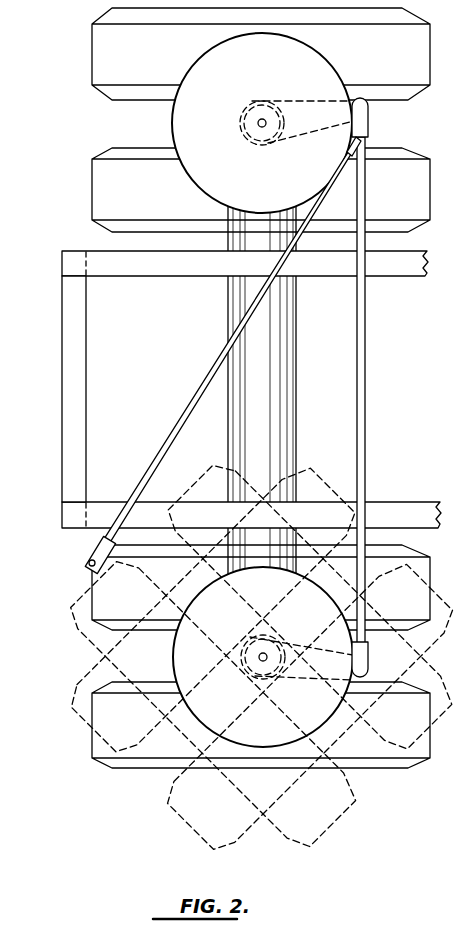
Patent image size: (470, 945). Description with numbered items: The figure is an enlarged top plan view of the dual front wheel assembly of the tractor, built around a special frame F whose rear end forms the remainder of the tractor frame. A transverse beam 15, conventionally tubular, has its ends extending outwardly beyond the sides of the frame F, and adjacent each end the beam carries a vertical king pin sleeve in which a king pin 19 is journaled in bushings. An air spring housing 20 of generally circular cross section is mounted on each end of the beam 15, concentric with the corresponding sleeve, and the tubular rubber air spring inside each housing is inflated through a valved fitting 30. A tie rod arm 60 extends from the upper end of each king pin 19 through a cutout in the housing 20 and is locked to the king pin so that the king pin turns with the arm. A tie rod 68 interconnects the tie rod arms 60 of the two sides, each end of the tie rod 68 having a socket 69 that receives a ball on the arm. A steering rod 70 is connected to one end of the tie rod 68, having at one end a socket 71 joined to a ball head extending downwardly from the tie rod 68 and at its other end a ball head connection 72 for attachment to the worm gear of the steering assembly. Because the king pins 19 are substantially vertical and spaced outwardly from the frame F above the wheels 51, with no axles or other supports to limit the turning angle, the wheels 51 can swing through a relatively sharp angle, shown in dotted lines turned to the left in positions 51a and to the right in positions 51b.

The transverse beam 15 is at (292, 413).
The king pin 19 is at (283, 119).
The air spring housing 20 is at (248, 72).
The valved fitting 30 is at (258, 121).
The wheels 51 is at (100, 44).
The wheel positions turned to the left 51a is at (86, 720).
The wheel positions turned to the right 51b is at (195, 487).
The tie rod arm 60 is at (297, 137).
The tie rod 68 is at (366, 413).
The socket 69 is at (369, 126).
The steering rod 70 is at (222, 353).
The socket 71 is at (349, 153).
The ball head connection 72 is at (90, 556).
The frame F is at (62, 356).